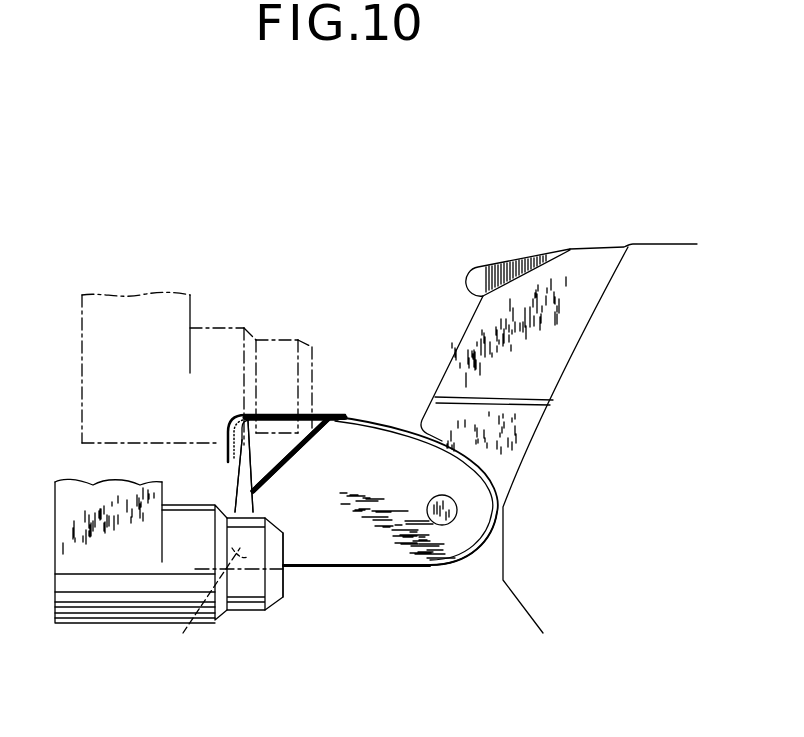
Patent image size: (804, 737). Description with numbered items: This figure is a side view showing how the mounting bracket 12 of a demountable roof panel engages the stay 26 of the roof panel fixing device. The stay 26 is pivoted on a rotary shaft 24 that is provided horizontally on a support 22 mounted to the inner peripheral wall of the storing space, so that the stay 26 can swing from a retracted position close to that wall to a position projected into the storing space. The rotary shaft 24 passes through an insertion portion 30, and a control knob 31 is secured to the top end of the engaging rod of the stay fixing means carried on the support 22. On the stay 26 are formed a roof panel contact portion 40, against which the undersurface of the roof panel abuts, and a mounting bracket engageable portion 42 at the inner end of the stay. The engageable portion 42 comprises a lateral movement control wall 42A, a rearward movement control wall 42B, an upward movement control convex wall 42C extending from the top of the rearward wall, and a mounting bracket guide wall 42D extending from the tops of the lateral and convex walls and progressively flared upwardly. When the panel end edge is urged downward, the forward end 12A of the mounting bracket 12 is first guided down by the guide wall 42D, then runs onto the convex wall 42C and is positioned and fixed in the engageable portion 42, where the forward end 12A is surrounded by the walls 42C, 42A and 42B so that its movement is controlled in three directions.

The mounting bracket 12 is at (203, 325).
The forward end 12A is at (303, 347).
The support 22 is at (525, 428).
The rotary shaft 24 is at (447, 508).
The stay 26 is at (372, 572).
The insertion portion 30 is at (485, 547).
The control knob 31 is at (475, 267).
The roof panel contact portion 40 is at (338, 415).
The mounting bracket engageable portion 42 is at (259, 556).
The lateral movement control wall 42A is at (198, 606).
The rearward movement control wall 42B is at (287, 550).
The upward movement control convex wall 42C is at (238, 503).
The mounting bracket guide wall 42D is at (243, 467).